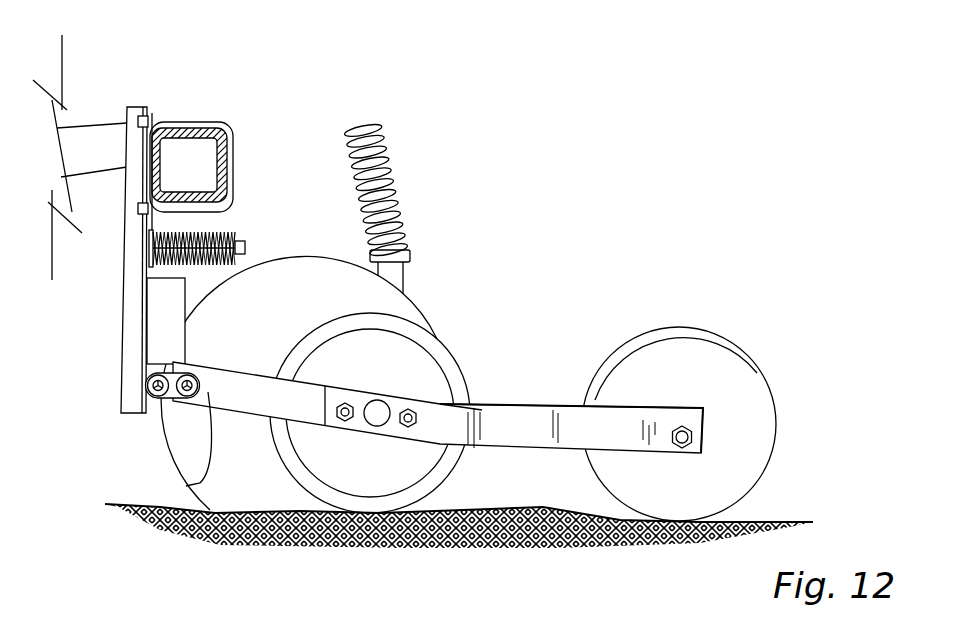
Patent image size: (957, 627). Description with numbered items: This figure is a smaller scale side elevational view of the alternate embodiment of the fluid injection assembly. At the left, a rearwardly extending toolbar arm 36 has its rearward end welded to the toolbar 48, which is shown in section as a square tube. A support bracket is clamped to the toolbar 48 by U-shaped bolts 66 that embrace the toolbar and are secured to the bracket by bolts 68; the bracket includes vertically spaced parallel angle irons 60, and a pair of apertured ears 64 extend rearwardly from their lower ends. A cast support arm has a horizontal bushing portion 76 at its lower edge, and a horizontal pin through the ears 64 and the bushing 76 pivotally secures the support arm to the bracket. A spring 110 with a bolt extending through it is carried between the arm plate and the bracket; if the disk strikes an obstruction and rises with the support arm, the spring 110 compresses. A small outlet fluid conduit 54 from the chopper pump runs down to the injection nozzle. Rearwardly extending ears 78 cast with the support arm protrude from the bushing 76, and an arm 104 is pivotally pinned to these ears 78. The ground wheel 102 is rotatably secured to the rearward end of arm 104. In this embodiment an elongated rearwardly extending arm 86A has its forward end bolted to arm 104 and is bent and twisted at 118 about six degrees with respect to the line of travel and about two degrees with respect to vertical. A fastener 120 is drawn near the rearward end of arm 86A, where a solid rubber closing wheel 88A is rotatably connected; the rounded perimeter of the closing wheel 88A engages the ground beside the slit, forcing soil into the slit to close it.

The toolbar arm 36 is at (103, 128).
The bolts 68 is at (140, 115).
The U-shaped bolts 66 is at (216, 121).
The toolbar 48 is at (228, 134).
The spring 110 is at (217, 232).
The outlet fluid conduit 54 is at (397, 176).
The angle irons 60 is at (128, 310).
The apertured ears 64 is at (156, 377).
The bushing portion 76 is at (162, 400).
The rearwardly extending ears 78 is at (187, 398).
The arm 104 is at (186, 486).
The ground wheel 102 is at (408, 322).
The elongated rearwardly extending arm 86A is at (476, 426).
The bend and twist location 118 is at (508, 405).
The bolt 120 is at (690, 427).
The closing wheel 88A is at (762, 423).